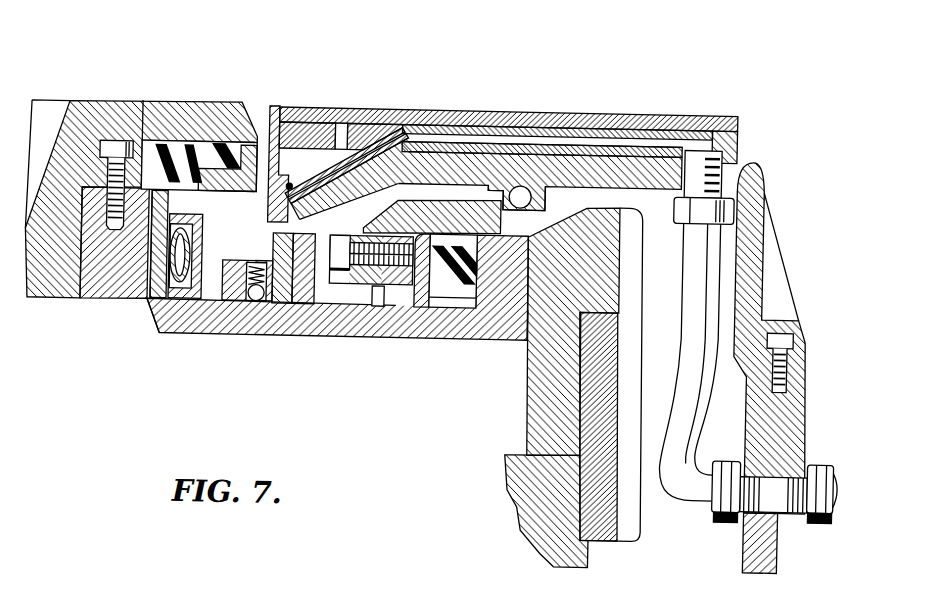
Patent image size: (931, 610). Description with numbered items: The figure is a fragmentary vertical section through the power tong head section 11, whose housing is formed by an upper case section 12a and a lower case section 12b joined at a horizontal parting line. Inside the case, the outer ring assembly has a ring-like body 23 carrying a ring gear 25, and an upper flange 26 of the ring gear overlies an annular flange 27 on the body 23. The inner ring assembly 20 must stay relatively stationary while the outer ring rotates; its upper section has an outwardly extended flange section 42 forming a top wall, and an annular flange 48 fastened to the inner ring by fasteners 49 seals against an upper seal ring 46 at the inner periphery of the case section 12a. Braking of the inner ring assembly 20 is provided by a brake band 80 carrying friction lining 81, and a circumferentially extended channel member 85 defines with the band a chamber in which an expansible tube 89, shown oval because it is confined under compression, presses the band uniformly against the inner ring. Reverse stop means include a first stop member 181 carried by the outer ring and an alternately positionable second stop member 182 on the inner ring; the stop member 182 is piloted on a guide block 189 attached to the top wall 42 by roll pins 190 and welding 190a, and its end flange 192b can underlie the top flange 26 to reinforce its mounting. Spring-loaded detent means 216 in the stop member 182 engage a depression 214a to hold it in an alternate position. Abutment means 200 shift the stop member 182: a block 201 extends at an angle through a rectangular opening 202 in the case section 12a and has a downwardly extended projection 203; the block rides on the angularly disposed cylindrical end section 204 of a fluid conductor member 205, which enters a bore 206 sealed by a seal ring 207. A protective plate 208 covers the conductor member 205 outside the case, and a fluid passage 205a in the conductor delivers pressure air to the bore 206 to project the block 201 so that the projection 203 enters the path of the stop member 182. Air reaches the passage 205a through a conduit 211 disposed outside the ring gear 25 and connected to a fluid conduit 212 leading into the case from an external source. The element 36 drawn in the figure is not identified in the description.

The power tong assembly head section 11 is at (388, 106).
The upper case section 12a is at (440, 147).
The lower case section 12b is at (752, 536).
The inner ring assembly 20 is at (155, 340).
The ring-like body 23 is at (520, 455).
The ring gear 25 is at (608, 538).
The upper flange 26 is at (521, 180).
The annular flange 27 is at (545, 342).
The ball seat 36 is at (529, 223).
The outwardly extended flange section 42 is at (515, 318).
The upper seal ring 46 is at (182, 148).
The annular flange 48 is at (165, 102).
The fasteners 49 is at (117, 144).
The brake band 80 is at (163, 283).
The friction lining 81 is at (155, 262).
The channel member 85 is at (193, 283).
The expansible tube 89 is at (160, 300).
The first stop member 181 is at (382, 306).
The second stop member 182 is at (187, 302).
The guide block 189 is at (340, 284).
The roll pins 190 is at (288, 305).
The welding 190a is at (310, 305).
The end flange 192b is at (450, 300).
The abutment means 200 is at (708, 102).
The block 201 is at (290, 182).
The rectangular opening 202 is at (449, 200).
The downwardly extended projection 203 is at (262, 238).
The cylindrical end section 204 is at (305, 195).
The fluid conductor member 205 is at (558, 125).
The fluid passage 205a is at (590, 134).
The bore 206 is at (340, 158).
The seal ring 207 is at (291, 178).
The protective plate 208 is at (654, 110).
The conduit 211 is at (706, 244).
The fluid conduit 212 is at (843, 508).
The depression 214a is at (260, 303).
The spring-loaded detent means 216 is at (256, 285).